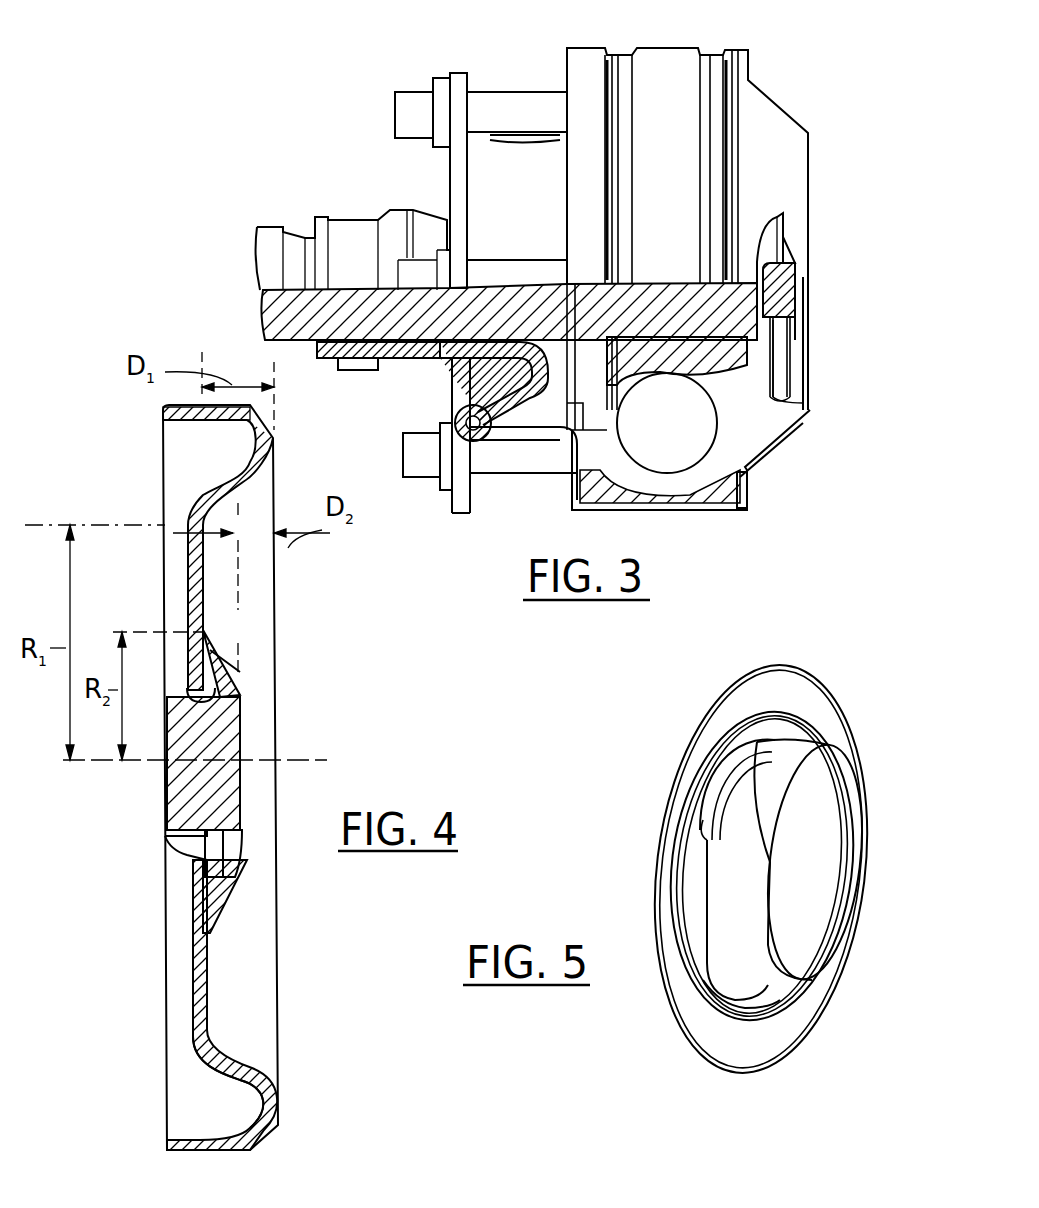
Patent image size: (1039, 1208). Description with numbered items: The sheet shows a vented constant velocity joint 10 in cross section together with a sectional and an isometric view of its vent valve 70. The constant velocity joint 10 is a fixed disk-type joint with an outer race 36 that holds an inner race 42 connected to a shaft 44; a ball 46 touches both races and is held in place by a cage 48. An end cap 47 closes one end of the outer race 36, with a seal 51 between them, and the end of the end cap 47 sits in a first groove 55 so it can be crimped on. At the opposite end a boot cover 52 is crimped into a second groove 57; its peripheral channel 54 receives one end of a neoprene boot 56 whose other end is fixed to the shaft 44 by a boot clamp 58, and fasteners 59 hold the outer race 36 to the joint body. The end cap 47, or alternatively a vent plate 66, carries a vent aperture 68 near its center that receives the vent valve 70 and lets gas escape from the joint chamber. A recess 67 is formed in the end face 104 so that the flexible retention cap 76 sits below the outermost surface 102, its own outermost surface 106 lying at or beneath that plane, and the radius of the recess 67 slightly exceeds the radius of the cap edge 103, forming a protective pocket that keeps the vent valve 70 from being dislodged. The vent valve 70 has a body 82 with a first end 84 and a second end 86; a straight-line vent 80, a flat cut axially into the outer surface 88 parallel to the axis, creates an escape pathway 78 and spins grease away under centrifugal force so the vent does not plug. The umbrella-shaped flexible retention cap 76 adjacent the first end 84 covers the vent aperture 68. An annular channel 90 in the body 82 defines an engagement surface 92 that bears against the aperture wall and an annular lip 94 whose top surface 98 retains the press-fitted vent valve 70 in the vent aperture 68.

In FIG. 3, the constant velocity joint 10 is at (298, 110).
In FIG. 3, the outer race 36 is at (690, 500).
In FIG. 3, the inner race 42 is at (745, 367).
In FIG. 3, the shaft 44 is at (486, 311).
In FIG. 3, the ball 46 is at (663, 462).
In FIG. 3, the end cap 47 is at (785, 130).
In FIG. 3, the cage 48 is at (763, 415).
In FIG. 3, the seal 51 is at (752, 492).
In FIG. 3, the boot cover 52 is at (556, 432).
In FIG. 3, the channel 54 is at (456, 410).
In FIG. 3, the first groove 55 is at (630, 48).
In FIG. 3, the boot 56 is at (442, 358).
In FIG. 3, the second groove 57 is at (708, 48).
In FIG. 3, the boot clamp 58 is at (355, 368).
In FIG. 3, the fasteners 59 is at (405, 450).
In FIG. 4, the vent plate 66 is at (274, 1103).
In FIG. 4, the recess 67 is at (222, 1057).
In FIG. 3, the vent aperture 68 is at (790, 248).
In FIG. 4, the vent aperture 68 is at (168, 860).
In FIG. 3, the vent valve 70 is at (788, 278).
In FIG. 4, the vent valve 70 is at (225, 755).
In FIG. 5, the vent valve 70 is at (878, 806).
In FIG. 4, the flexible retention cap 76 is at (235, 880).
In FIG. 5, the flexible retention cap 76 is at (775, 665).
In FIG. 4, the escape pathway 78 is at (215, 845).
In FIG. 5, the escape pathway 78 is at (720, 892).
In FIG. 3, the straight-line vent 80 is at (792, 310).
In FIG. 4, the straight-line vent 80 is at (178, 830).
In FIG. 5, the straight-line vent 80 is at (737, 948).
In FIG. 5, the body 82 is at (812, 760).
In FIG. 5, the first end 84 is at (840, 907).
In FIG. 5, the second end 86 is at (663, 858).
In FIG. 5, the outer surface 88 is at (710, 1000).
In FIG. 4, the annular channel 90 is at (227, 663).
In FIG. 5, the annular channel 90 is at (748, 752).
In FIG. 4, the engagement surface 92 is at (215, 890).
In FIG. 4, the annular lip 94 is at (195, 695).
In FIG. 5, the annular lip 94 is at (752, 793).
In FIG. 4, the top surface 98 is at (233, 652).
In FIG. 3, the outermost surface 102 is at (812, 172).
In FIG. 4, the outermost surface 102 is at (278, 578).
In FIG. 4, the edge 103 is at (198, 938).
In FIG. 3, the end face 104 is at (785, 222).
In FIG. 4, the end face 104 is at (207, 970).
In FIG. 3, the outermost surface of the flexible retention cap 106 is at (797, 292).
In FIG. 4, the outermost surface of the flexible retention cap 106 is at (243, 725).